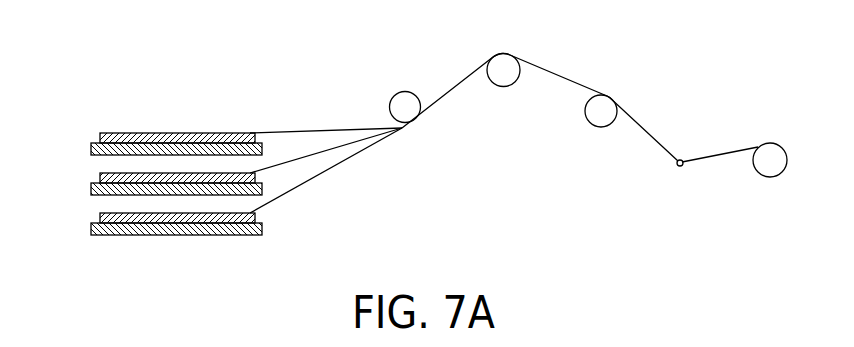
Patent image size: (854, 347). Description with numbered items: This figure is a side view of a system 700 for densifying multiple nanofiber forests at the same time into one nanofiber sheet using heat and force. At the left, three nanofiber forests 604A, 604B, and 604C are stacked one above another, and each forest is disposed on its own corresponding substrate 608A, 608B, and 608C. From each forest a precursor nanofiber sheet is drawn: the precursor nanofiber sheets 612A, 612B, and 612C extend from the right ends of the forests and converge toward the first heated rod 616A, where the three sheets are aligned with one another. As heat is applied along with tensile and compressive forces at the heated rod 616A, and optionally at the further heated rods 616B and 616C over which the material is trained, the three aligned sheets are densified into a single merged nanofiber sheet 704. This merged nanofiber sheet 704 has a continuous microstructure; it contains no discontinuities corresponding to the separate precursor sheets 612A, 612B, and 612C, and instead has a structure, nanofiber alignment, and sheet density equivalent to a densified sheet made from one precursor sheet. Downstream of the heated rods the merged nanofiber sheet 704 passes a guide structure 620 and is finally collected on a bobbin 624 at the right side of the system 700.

The nanofiber forest 604A is at (110, 132).
The substrate 608A is at (92, 150).
The nanofiber forest 604B is at (100, 176).
The substrate 608B is at (92, 188).
The nanofiber forest 604C is at (100, 217).
The substrate 608C is at (105, 232).
The precursor nanofiber sheet 612A is at (337, 128).
The precursor nanofiber sheet 612B is at (340, 152).
The precursor nanofiber sheet 612C is at (302, 188).
The first heated rod 616A is at (400, 94).
The heated rod 616B is at (502, 52).
The heated rod 616C is at (585, 110).
The single merged nanofiber sheet 704 is at (456, 91).
The guide structure 620 is at (681, 160).
The bobbin 624 is at (788, 162).
The system 700 is at (760, 90).